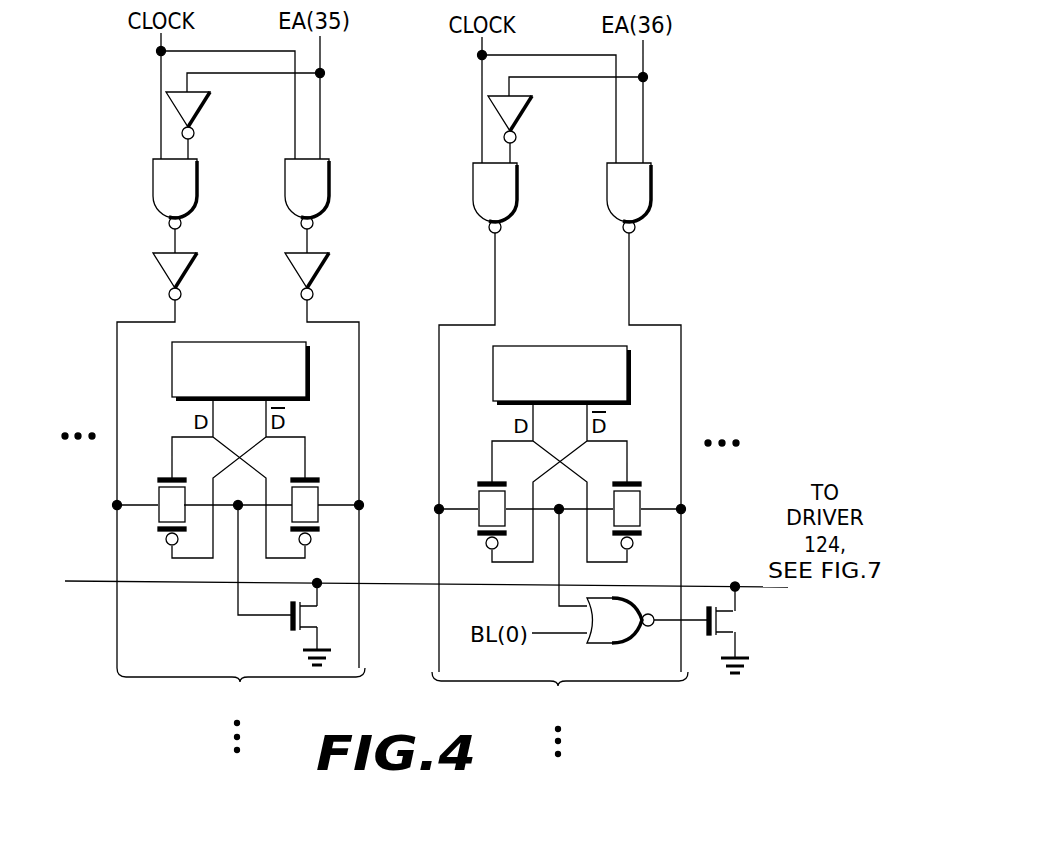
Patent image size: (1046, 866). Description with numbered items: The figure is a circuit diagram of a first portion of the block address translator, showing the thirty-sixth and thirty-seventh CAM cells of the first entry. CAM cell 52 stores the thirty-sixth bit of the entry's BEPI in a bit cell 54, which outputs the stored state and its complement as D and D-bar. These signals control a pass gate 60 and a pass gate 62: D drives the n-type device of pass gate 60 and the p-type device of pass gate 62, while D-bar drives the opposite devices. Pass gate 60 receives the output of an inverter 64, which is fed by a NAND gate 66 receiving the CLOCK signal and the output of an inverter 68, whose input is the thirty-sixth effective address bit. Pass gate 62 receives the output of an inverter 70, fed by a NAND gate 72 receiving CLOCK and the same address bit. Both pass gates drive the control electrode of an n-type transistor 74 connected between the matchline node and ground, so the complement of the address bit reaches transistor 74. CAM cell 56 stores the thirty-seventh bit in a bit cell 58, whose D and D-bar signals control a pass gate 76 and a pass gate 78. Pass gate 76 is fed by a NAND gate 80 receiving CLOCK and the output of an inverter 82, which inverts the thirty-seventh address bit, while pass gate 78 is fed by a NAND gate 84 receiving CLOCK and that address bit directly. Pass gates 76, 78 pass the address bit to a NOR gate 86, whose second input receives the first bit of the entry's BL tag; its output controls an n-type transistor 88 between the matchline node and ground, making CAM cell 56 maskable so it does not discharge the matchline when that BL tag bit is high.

The CAM cell 52 is at (241, 689).
The bit cell 54 is at (243, 342).
The CAM cell 56 is at (560, 693).
The bit cell 58 is at (564, 346).
The pass gate 60 is at (158, 530).
The pass gate 62 is at (319, 530).
The inverter 64 is at (162, 268).
The NAND gate 66 is at (163, 194).
The inverter 68 is at (204, 112).
The inverter 70 is at (319, 270).
The NAND gate 72 is at (295, 194).
The n-type transistor 74 is at (291, 627).
The pass gate 76 is at (479, 534).
The pass gate 78 is at (641, 534).
The NAND gate 80 is at (483, 198).
The inverter 82 is at (526, 116).
The NAND gate 84 is at (617, 198).
The NOR gate 86 is at (598, 631).
The n-type transistor 88 is at (708, 636).